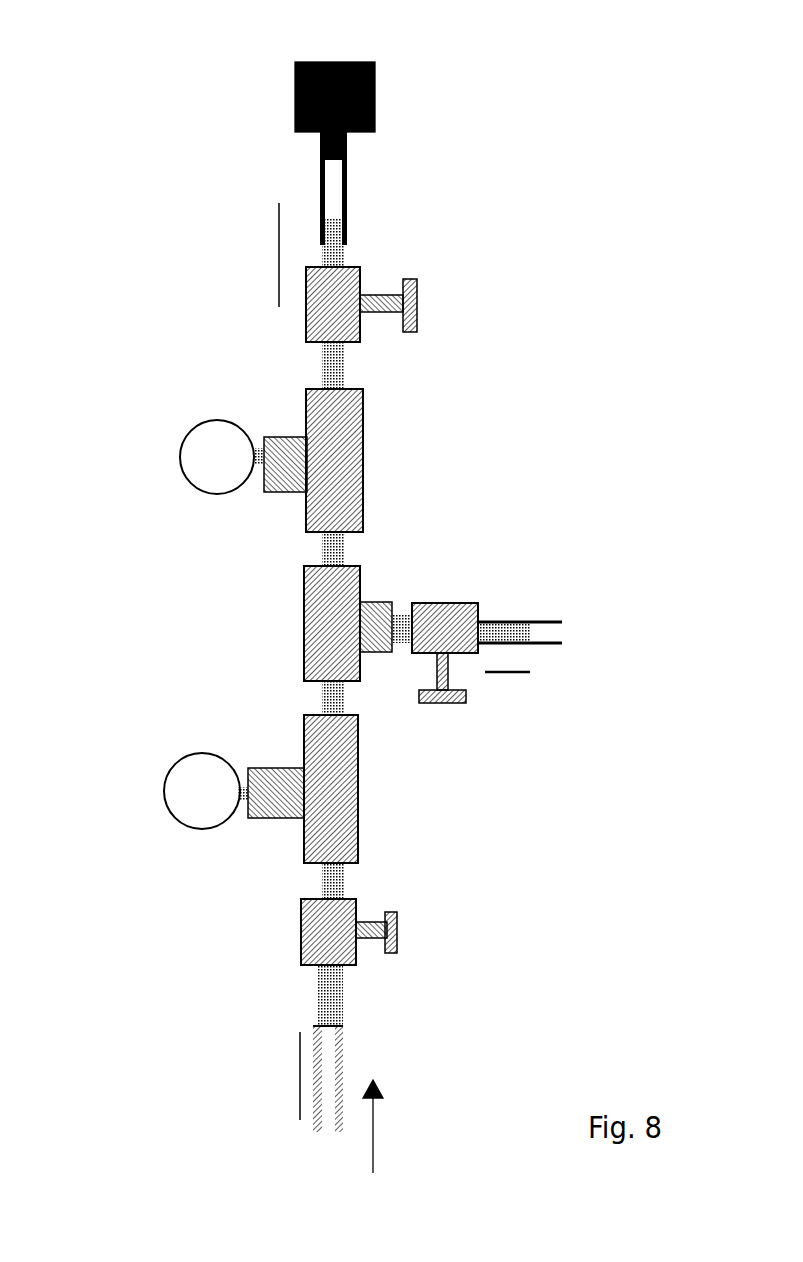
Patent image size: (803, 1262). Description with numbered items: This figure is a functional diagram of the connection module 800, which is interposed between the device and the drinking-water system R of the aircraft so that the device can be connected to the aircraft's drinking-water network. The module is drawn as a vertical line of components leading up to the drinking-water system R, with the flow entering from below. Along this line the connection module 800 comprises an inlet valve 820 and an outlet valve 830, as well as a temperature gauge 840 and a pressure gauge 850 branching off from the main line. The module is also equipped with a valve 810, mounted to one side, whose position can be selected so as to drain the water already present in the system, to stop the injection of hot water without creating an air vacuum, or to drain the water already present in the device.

The drinking-water system R is at (367, 62).
The connection module 800 is at (200, 601).
The valve 810 is at (432, 635).
The inlet valve 820 is at (353, 923).
The outlet valve 830 is at (337, 303).
The temperature gauge 840 is at (200, 800).
The pressure gauge 850 is at (222, 472).